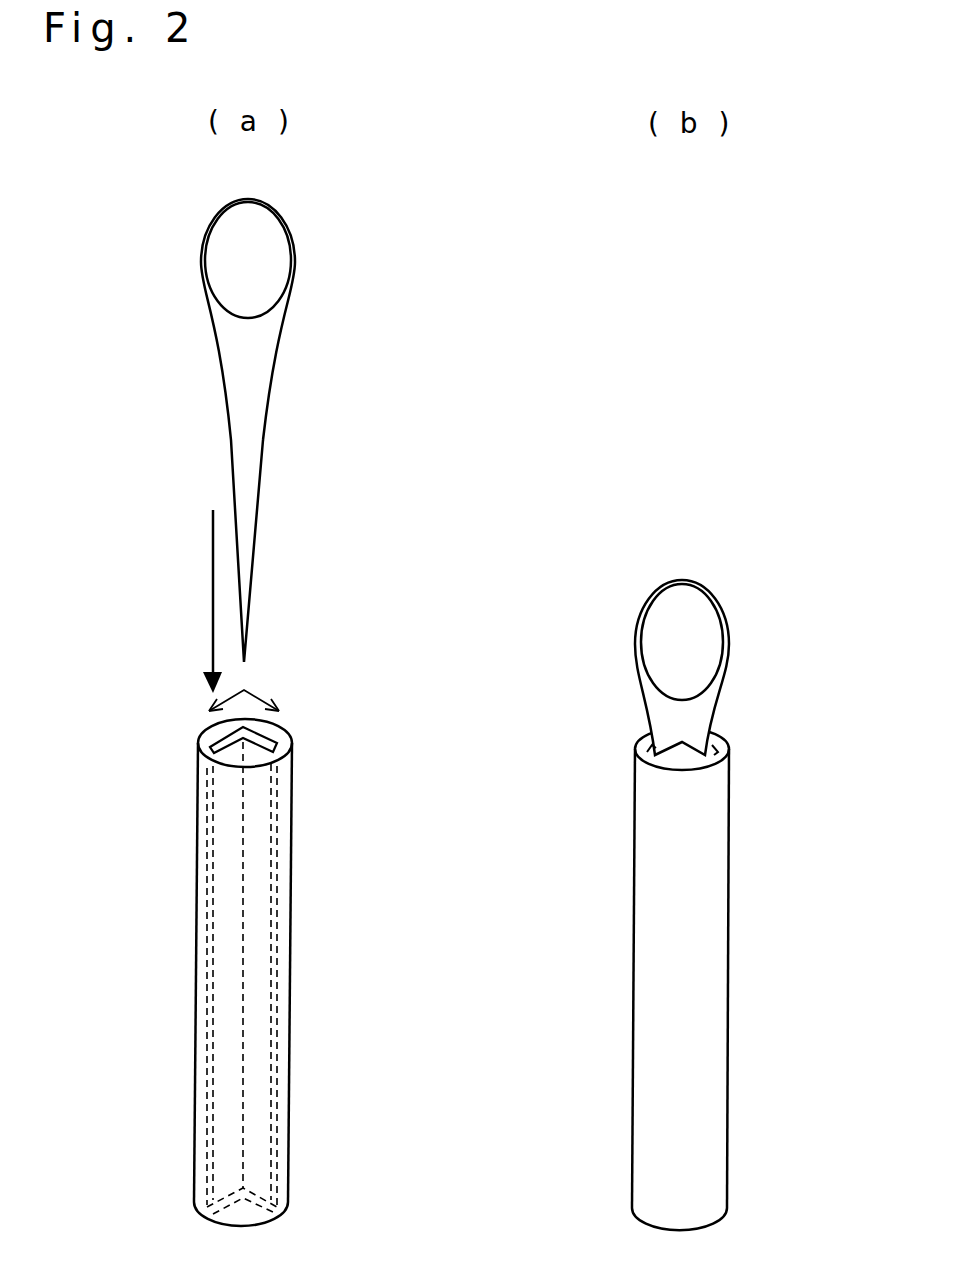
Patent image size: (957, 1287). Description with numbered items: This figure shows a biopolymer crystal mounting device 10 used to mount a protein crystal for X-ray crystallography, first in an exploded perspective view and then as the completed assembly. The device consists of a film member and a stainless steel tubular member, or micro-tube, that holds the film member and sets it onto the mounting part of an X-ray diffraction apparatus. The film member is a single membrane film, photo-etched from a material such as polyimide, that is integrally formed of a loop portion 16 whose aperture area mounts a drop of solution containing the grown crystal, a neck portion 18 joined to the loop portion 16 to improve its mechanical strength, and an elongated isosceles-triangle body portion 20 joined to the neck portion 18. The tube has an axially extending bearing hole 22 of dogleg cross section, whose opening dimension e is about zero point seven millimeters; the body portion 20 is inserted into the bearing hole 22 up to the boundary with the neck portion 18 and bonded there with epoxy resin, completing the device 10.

The biopolymer crystal mounting device 10 is at (684, 890).
The loop portion 16 is at (292, 263).
The neck portion 18 is at (257, 330).
The body portion 20 is at (252, 455).
The bearing hole 22 is at (268, 739).
The opening dimension of the bearing hole e is at (257, 698).